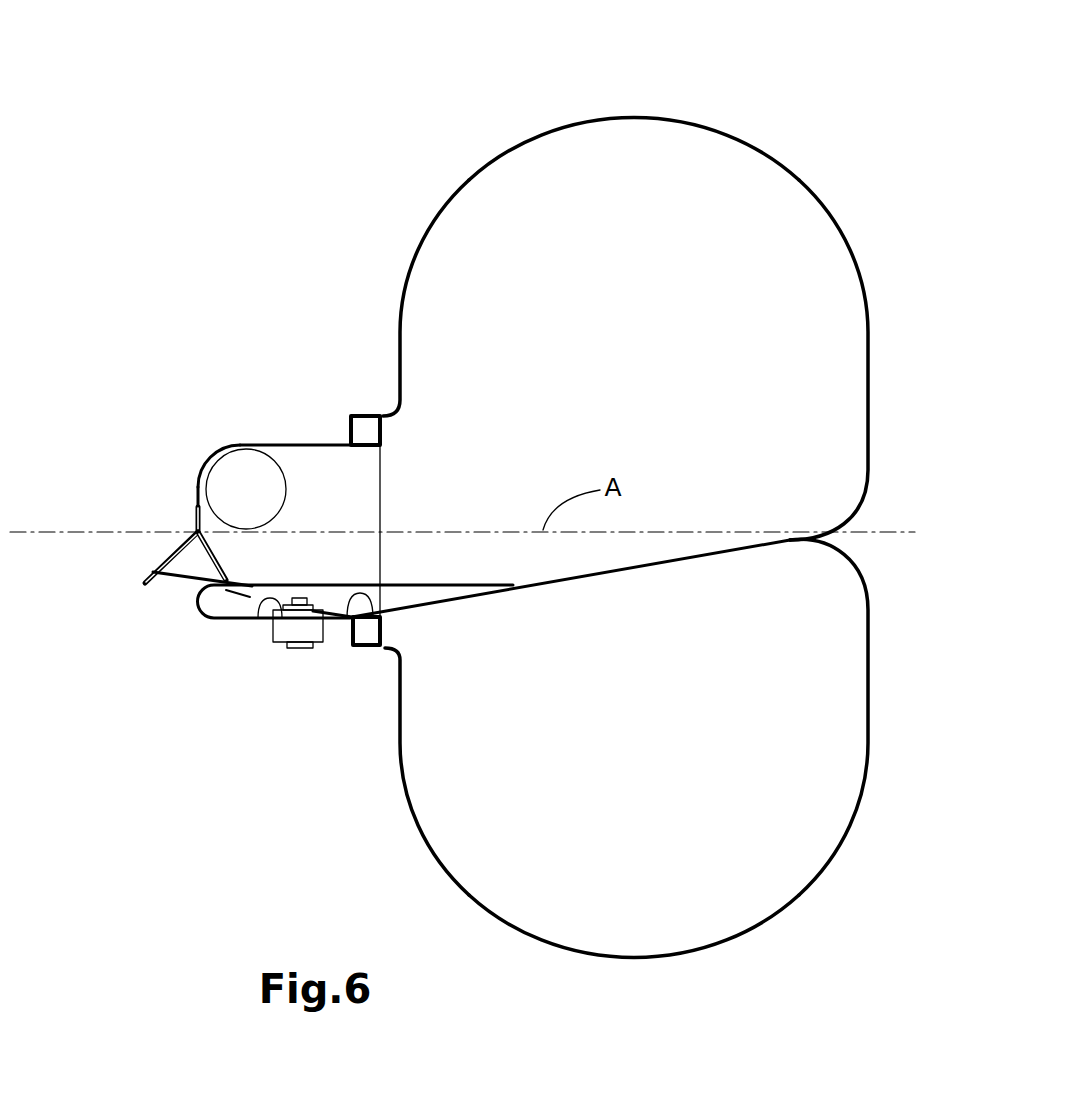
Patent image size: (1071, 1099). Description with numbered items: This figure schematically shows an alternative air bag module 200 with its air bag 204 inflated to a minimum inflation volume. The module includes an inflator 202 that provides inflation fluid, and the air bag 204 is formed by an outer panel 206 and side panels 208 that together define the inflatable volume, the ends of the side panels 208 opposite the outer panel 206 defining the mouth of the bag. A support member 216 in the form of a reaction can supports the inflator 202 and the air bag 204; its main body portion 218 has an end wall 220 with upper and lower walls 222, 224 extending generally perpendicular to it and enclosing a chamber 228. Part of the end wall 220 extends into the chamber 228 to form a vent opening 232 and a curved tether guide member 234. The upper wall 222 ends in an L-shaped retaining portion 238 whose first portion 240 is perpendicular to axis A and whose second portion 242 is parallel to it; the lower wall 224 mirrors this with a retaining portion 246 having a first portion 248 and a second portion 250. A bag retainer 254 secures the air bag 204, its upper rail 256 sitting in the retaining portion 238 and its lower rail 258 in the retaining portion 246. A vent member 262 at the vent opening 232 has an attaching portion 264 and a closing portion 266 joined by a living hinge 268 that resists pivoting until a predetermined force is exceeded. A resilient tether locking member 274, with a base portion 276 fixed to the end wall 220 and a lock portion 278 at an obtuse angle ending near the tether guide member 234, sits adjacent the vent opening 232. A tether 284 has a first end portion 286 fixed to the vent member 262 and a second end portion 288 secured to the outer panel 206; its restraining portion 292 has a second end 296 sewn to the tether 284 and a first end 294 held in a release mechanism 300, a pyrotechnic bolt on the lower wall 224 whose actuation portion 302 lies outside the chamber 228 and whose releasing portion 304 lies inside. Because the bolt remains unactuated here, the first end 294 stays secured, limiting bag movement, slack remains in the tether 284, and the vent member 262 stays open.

The air bag module 200 is at (320, 120).
The air bag 204 is at (759, 142).
The outer panel 206 is at (869, 312).
The side panels 208 is at (432, 231).
The support member 216 is at (216, 445).
The main body portion 218 is at (249, 441).
The end wall 220 is at (197, 487).
The upper wall 222 is at (297, 443).
The lower wall 224 is at (252, 620).
The chamber 228 is at (311, 551).
The vent opening 232 is at (188, 565).
The tether guide member 234 is at (243, 620).
The retaining portion 238 is at (357, 413).
The first portion 240 is at (350, 430).
The second portion 242 is at (375, 415).
The retaining portion 246 is at (355, 659).
The first portion 248 is at (343, 632).
The second portion 250 is at (373, 650).
The bag retainer 254 is at (389, 451).
The upper rail 256 is at (385, 433).
The lower rail 258 is at (391, 634).
The vent member 262 is at (178, 541).
The attaching portion 264 is at (196, 503).
The closing portion 266 is at (143, 585).
The living hinge 268 is at (196, 522).
The tether locking member 274 is at (223, 560).
The base portion 276 is at (207, 515).
The lock portion 278 is at (227, 573).
The tether 284 is at (677, 563).
The first end portion 286 is at (183, 579).
The second end portion 288 is at (772, 542).
The restraining portion 292 is at (467, 602).
The first end 294 is at (386, 605).
The second end 296 is at (504, 590).
The release mechanism 300 is at (287, 657).
The actuation portion 302 is at (302, 628).
The releasing portion 304 is at (268, 622).
The inflator 202 is at (263, 488).